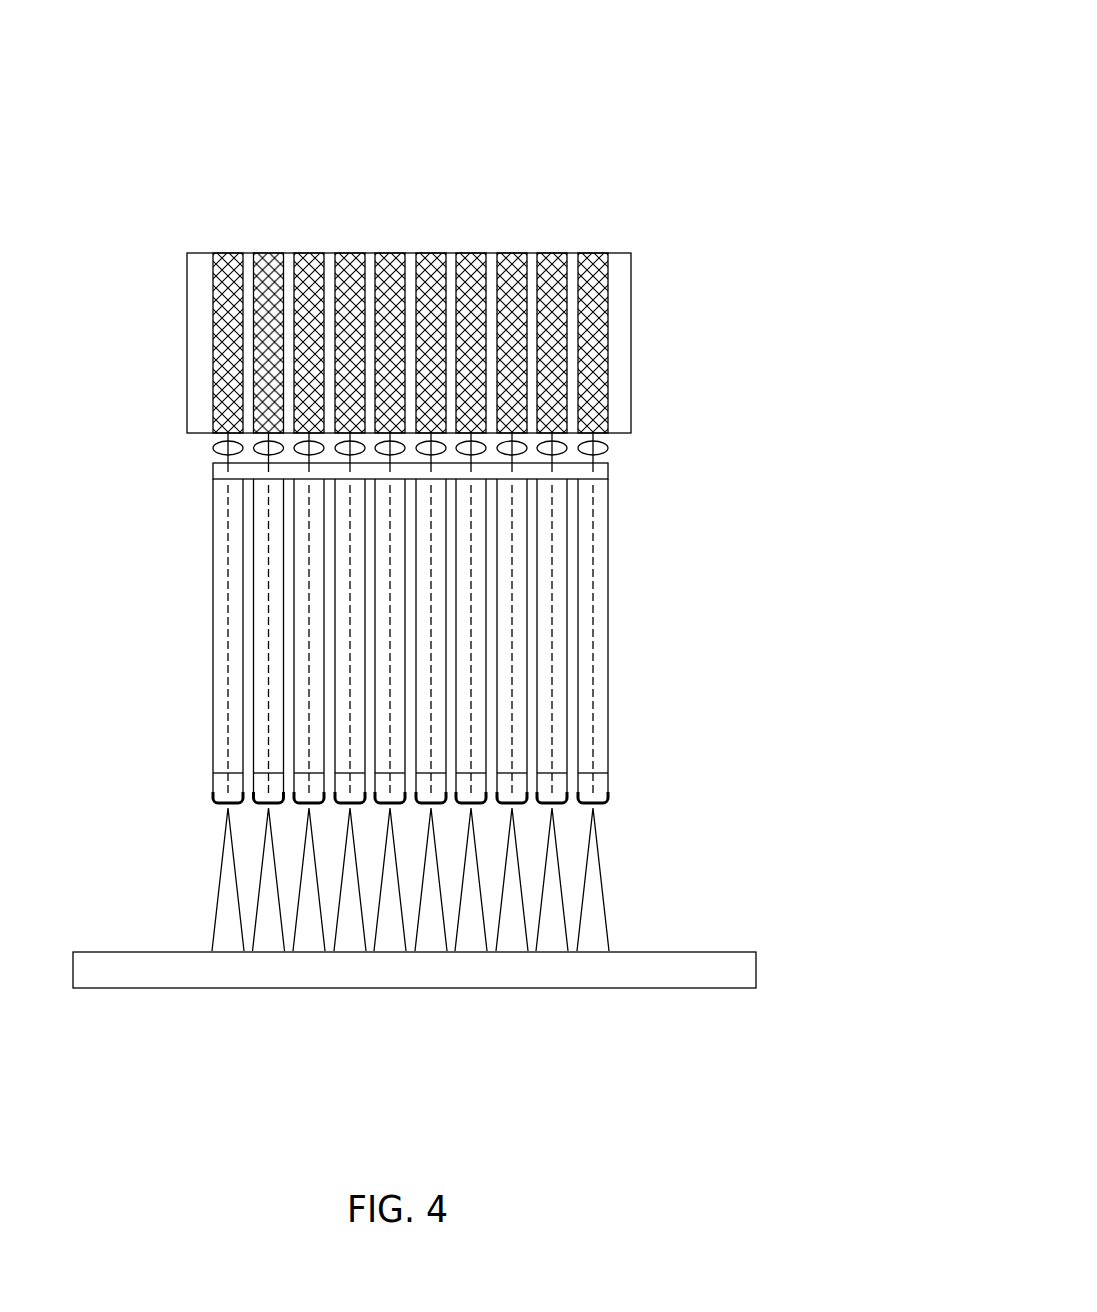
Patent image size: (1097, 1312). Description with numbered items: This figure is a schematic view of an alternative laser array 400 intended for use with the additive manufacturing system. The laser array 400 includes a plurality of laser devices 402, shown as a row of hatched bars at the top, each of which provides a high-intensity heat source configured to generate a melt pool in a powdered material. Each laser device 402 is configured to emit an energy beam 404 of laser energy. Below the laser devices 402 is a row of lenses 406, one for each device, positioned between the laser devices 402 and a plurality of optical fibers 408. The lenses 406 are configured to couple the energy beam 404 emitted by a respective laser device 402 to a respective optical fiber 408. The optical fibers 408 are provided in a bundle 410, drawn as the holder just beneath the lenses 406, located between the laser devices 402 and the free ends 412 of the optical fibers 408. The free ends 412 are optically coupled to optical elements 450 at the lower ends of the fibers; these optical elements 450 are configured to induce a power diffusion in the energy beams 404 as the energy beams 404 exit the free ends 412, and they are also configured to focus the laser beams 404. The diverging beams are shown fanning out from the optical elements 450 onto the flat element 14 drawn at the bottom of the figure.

The laser array 400 is at (622, 52).
The laser devices 402 is at (549, 253).
The energy beam 404 is at (553, 460).
The lenses 406 is at (226, 457).
The optical fibers 408 is at (228, 625).
The bundle 410 is at (213, 471).
The free ends 412 is at (204, 790).
The optical elements 450 is at (609, 785).
The substrate 14 is at (757, 968).